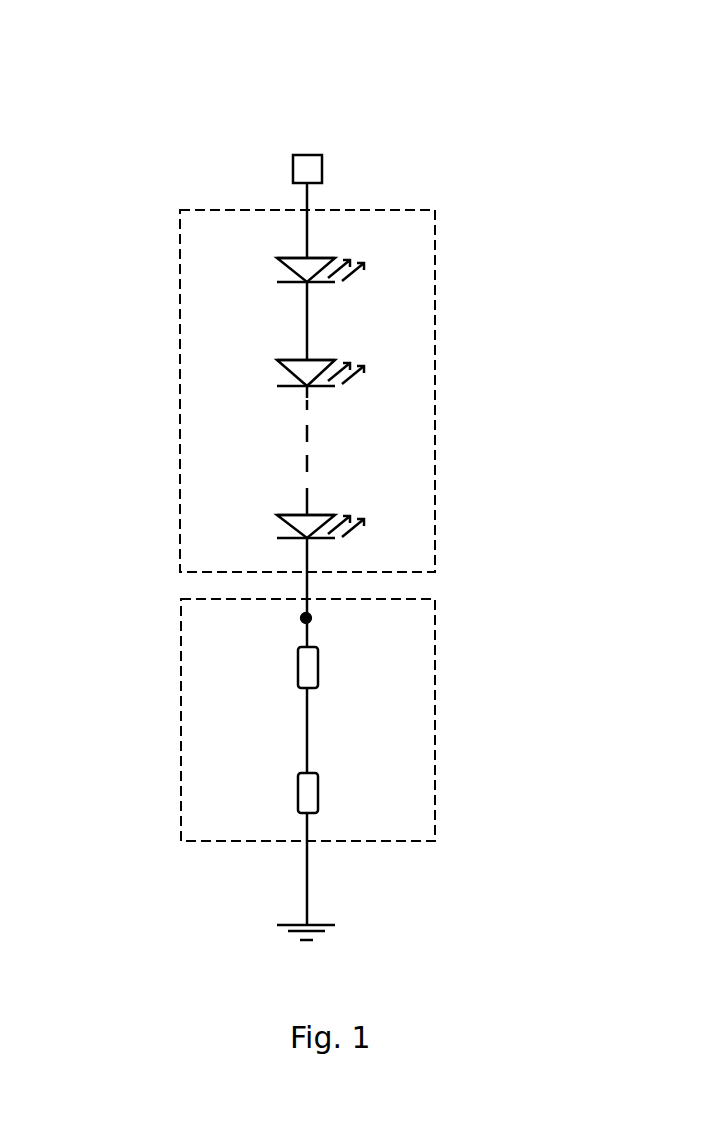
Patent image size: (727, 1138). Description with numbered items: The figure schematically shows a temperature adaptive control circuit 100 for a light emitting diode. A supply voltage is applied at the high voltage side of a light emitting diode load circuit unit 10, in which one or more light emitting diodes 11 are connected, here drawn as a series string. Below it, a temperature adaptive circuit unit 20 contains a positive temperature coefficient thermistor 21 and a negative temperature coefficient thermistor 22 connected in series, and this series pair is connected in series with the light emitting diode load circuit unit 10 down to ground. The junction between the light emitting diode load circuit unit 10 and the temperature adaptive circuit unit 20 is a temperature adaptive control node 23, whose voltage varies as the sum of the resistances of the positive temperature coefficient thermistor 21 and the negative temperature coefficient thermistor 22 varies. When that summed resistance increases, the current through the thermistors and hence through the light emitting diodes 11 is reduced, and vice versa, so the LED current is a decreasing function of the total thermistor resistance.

The temperature adaptive control circuit 100 is at (337, 42).
The light emitting diode load circuit unit 10 is at (435, 340).
The light emitting diodes 11 is at (248, 515).
The temperature adaptive circuit unit 20 is at (435, 727).
The positive temperature coefficient thermistor 21 is at (295, 660).
The negative temperature coefficient thermistor 22 is at (295, 789).
The temperature adaptive control node 23 is at (310, 615).